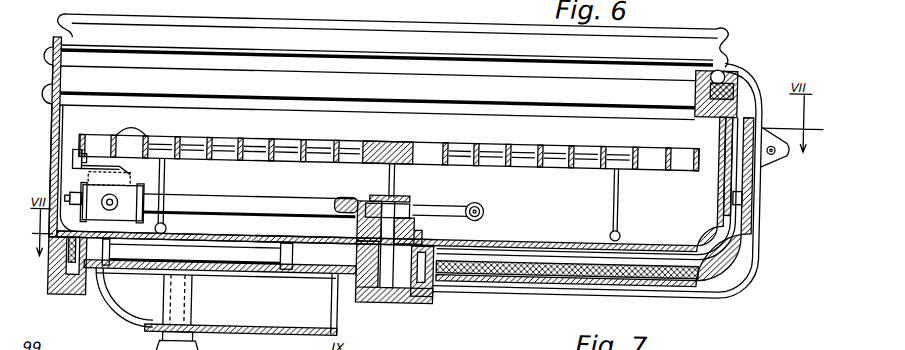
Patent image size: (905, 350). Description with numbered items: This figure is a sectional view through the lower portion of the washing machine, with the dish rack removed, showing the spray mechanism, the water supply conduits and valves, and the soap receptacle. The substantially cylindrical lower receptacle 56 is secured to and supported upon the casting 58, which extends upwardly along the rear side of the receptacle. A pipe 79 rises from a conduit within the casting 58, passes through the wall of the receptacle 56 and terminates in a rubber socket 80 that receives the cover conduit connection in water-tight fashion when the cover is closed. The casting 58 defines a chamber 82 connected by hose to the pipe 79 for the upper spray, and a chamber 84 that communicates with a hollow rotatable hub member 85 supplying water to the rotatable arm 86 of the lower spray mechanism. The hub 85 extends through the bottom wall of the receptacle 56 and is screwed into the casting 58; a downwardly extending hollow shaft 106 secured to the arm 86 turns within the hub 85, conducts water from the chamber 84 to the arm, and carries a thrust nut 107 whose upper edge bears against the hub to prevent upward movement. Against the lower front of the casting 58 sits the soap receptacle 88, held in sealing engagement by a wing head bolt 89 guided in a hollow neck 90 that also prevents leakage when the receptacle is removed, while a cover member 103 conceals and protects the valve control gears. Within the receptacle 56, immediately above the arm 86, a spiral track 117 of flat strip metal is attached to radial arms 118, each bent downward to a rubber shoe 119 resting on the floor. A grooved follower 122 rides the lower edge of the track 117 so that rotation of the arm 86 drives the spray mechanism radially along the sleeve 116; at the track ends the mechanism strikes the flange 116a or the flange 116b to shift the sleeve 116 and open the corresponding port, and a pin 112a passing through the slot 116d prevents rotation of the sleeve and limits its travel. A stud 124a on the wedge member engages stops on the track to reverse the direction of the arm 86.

The lower receptacle 56 is at (728, 203).
The casting 58 is at (716, 283).
The pipe 79 is at (755, 110).
The rubber socket 80 is at (728, 57).
The chamber 82 is at (438, 290).
The chamber 84 is at (241, 302).
The hollow rotatable hub member 85 is at (426, 222).
The rotatable arm 86 is at (439, 196).
The soap receptacle 88 is at (107, 308).
The wing head bolt 89 is at (204, 340).
The hollow neck 90 is at (169, 302).
The cover member 103 is at (54, 269).
The hollow shaft 106 is at (360, 221).
The thrust nut 107 is at (402, 296).
The pin 112a is at (370, 190).
The sleeve 116 is at (257, 192).
The flange 116a is at (86, 220).
The flange 116b is at (383, 191).
The slot 116d is at (338, 196).
The spiral track 117 is at (136, 128).
The radial arm 118 is at (621, 180).
The rubber shoe 119 is at (623, 223).
The follower 122 is at (78, 148).
The stud 124a is at (167, 176).